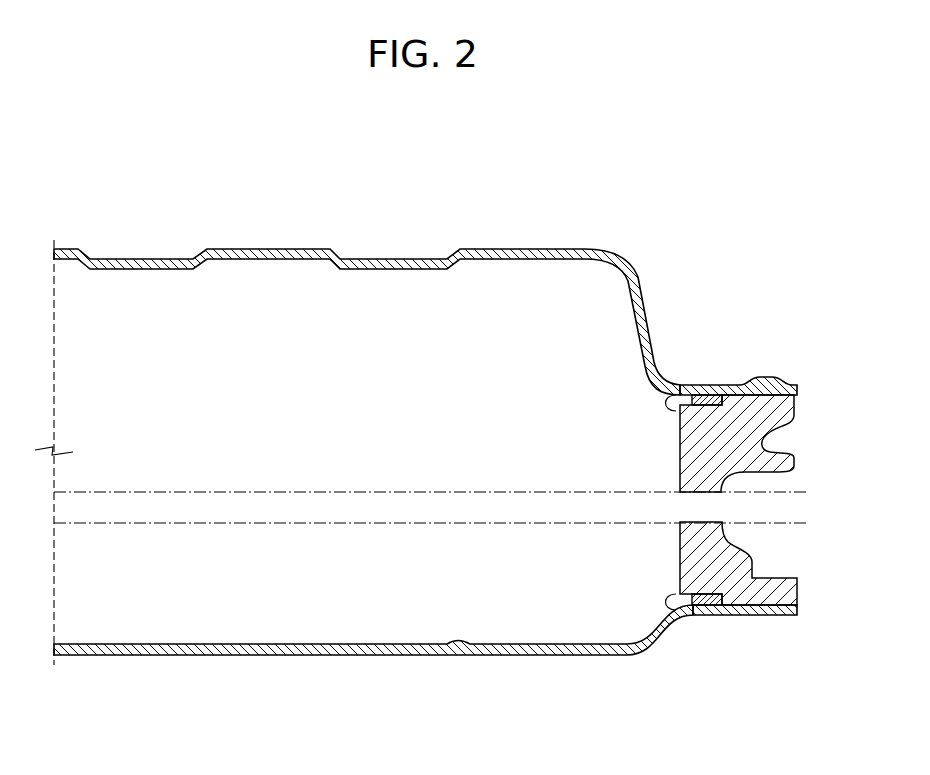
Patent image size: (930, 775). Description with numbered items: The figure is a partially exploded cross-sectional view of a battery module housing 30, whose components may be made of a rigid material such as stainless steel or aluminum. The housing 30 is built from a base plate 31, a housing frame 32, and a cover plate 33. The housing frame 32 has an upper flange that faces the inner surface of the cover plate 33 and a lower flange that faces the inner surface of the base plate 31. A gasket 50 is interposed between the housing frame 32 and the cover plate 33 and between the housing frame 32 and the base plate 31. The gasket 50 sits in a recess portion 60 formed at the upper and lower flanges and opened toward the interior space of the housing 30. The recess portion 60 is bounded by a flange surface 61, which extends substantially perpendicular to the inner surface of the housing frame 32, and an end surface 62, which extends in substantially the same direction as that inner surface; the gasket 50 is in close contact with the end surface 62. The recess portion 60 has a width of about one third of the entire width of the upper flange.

The housing 30 is at (427, 466).
The base plate 31 is at (645, 653).
The housing frame 32 is at (740, 578).
The cover plate 33 is at (633, 272).
The gasket 50 is at (721, 386).
The recess portion 60 is at (692, 384).
The flange surface 61 is at (672, 395).
The end surface 62 is at (755, 378).